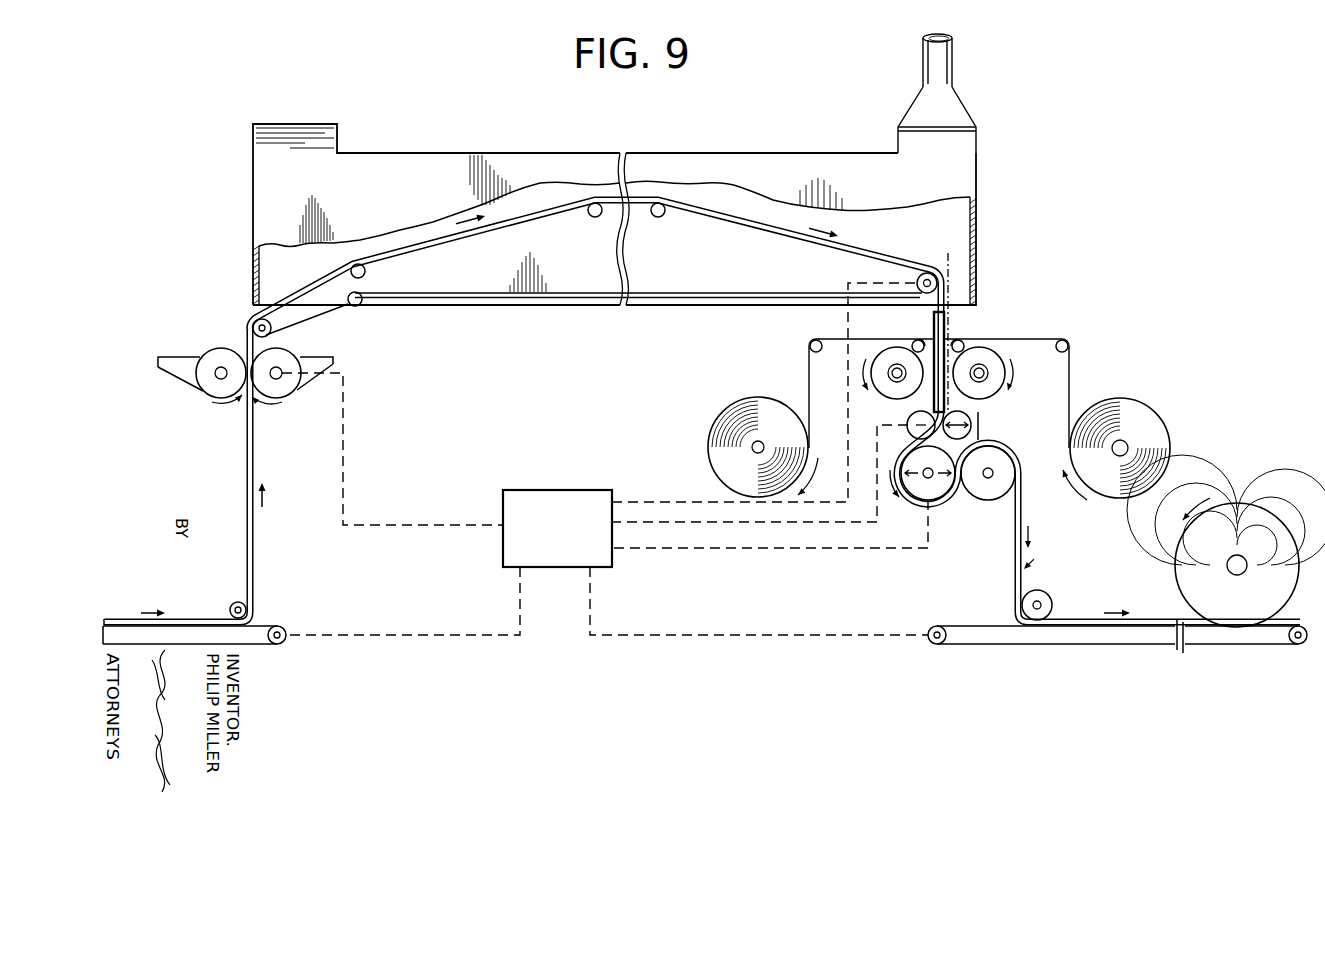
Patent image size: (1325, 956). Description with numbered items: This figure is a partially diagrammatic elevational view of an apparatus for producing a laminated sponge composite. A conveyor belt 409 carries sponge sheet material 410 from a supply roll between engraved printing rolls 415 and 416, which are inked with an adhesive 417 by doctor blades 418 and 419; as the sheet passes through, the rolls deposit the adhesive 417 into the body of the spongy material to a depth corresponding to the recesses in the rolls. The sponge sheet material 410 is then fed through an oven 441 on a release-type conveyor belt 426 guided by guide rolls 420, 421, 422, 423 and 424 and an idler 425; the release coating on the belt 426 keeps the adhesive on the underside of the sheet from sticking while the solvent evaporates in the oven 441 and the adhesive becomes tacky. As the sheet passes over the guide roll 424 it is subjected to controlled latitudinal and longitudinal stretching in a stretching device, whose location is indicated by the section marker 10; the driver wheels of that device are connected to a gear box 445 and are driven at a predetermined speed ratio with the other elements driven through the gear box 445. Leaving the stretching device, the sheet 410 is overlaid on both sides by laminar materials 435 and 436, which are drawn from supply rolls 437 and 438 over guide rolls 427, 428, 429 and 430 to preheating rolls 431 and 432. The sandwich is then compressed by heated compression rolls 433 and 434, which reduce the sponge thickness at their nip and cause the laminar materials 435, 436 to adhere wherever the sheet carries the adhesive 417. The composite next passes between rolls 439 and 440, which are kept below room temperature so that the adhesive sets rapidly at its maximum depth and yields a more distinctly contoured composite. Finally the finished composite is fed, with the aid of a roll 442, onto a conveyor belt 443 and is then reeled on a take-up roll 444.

The section line 10 is at (991, 349).
The conveyor belt 409 is at (273, 626).
The sponge sheet material 410 is at (708, 214).
The printing roll 415 is at (224, 358).
The printing roll 416 is at (280, 361).
The adhesive 417 is at (163, 366).
The doctor blade 418 is at (186, 385).
The doctor blade 419 is at (308, 389).
The guide roll 420 is at (253, 326).
The guide roll 421 is at (354, 265).
The guide roll 422 is at (593, 218).
The guide roll 423 is at (652, 217).
The guide roll 424 is at (926, 272).
The idler 425 is at (355, 307).
The conveyor belt 426 is at (748, 226).
The guide roll 427 is at (1067, 343).
The guide roll 428 is at (958, 340).
The guide roll 429 is at (919, 340).
The guide roll 430 is at (812, 342).
The preheating roll 431 is at (995, 366).
The preheating roll 432 is at (891, 358).
The compression roll 433 is at (908, 418).
The compression roll 434 is at (969, 419).
The laminar material 435 is at (809, 372).
The laminar material 436 is at (1071, 376).
The supply roll 437 is at (753, 447).
The supply roll 438 is at (1128, 445).
The roll 439 is at (916, 492).
The roll 440 is at (985, 492).
The oven 441 is at (444, 157).
The guide roller 442 is at (1045, 598).
The conveyor belt 443 is at (1048, 645).
The take-up roll 444 is at (1242, 556).
The gear box 445 is at (571, 497).